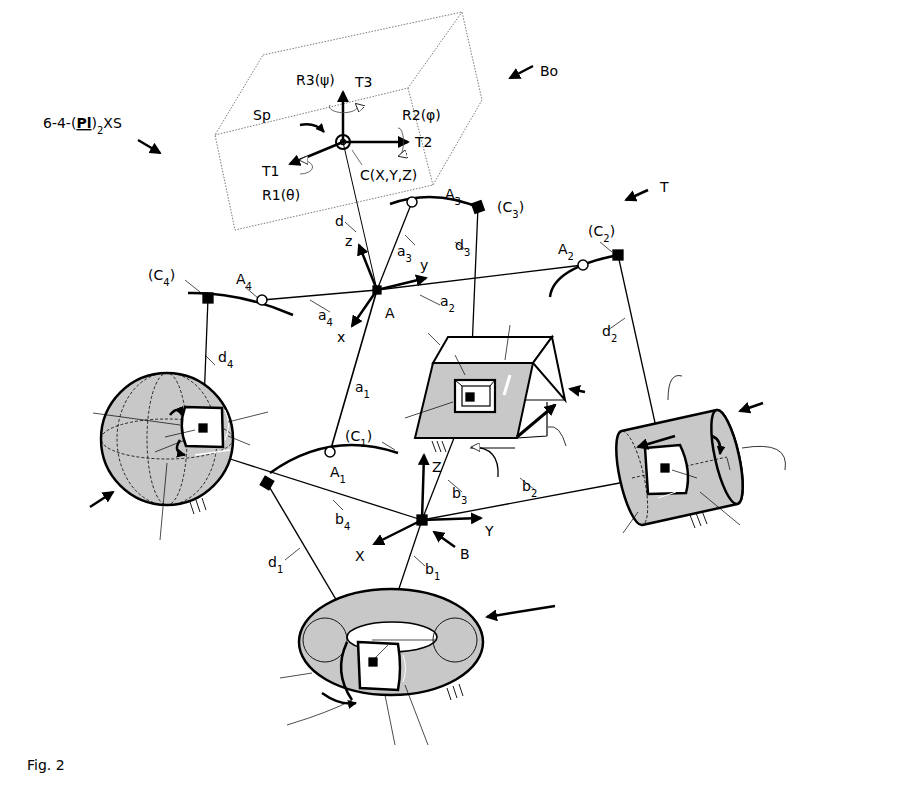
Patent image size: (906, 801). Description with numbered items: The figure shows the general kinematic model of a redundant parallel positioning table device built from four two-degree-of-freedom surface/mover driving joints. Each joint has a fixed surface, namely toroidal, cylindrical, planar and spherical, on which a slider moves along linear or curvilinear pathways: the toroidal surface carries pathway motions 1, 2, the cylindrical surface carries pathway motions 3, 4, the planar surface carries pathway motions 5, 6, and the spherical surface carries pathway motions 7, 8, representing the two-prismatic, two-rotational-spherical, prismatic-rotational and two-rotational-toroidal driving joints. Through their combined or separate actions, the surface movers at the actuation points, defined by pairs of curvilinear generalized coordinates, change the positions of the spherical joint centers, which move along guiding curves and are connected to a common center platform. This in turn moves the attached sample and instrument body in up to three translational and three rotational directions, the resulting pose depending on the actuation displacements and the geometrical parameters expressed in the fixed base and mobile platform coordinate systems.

The actuated joint motion 1 is at (372, 700).
The actuated joint motion 2 is at (402, 677).
The actuated joint motion 3 is at (675, 507).
The actuated joint motion 4 is at (683, 471).
The actuated joint motion 5 is at (478, 380).
The actuated joint motion 6 is at (508, 360).
The actuated joint motion 7 is at (228, 410).
The actuated joint motion 8 is at (173, 462).